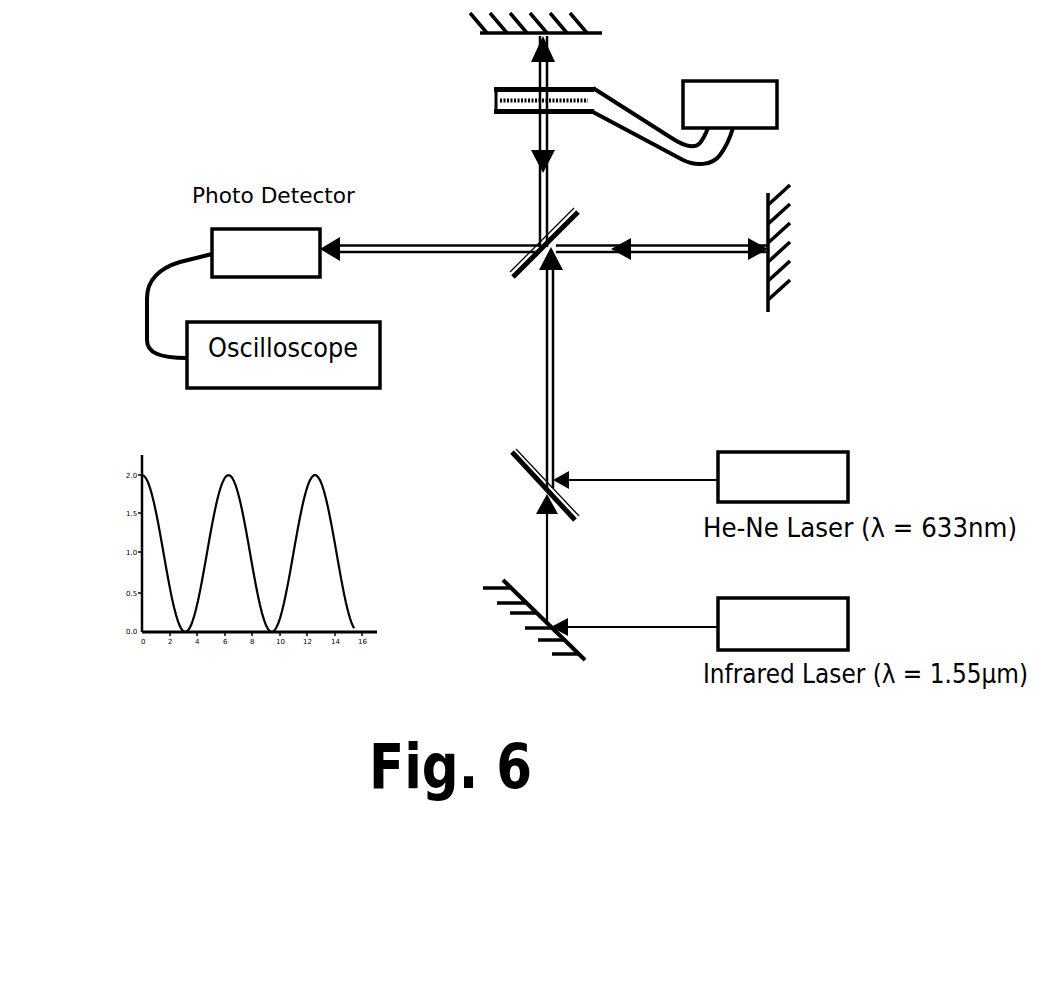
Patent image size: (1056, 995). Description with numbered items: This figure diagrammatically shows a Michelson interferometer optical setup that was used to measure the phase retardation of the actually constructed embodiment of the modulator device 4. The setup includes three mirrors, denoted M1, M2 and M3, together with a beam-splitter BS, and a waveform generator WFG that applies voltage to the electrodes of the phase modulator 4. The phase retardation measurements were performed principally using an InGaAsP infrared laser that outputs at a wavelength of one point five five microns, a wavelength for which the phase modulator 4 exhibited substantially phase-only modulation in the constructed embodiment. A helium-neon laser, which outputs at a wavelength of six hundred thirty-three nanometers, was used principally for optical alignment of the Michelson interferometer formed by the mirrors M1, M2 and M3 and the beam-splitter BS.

The modulator device 4 is at (465, 100).
The mirror M1 is at (550, 635).
The mirror M2 is at (794, 260).
The mirror M3 is at (501, 27).
The beam-splitter BS is at (534, 376).
The waveform generator WFG is at (685, 122).